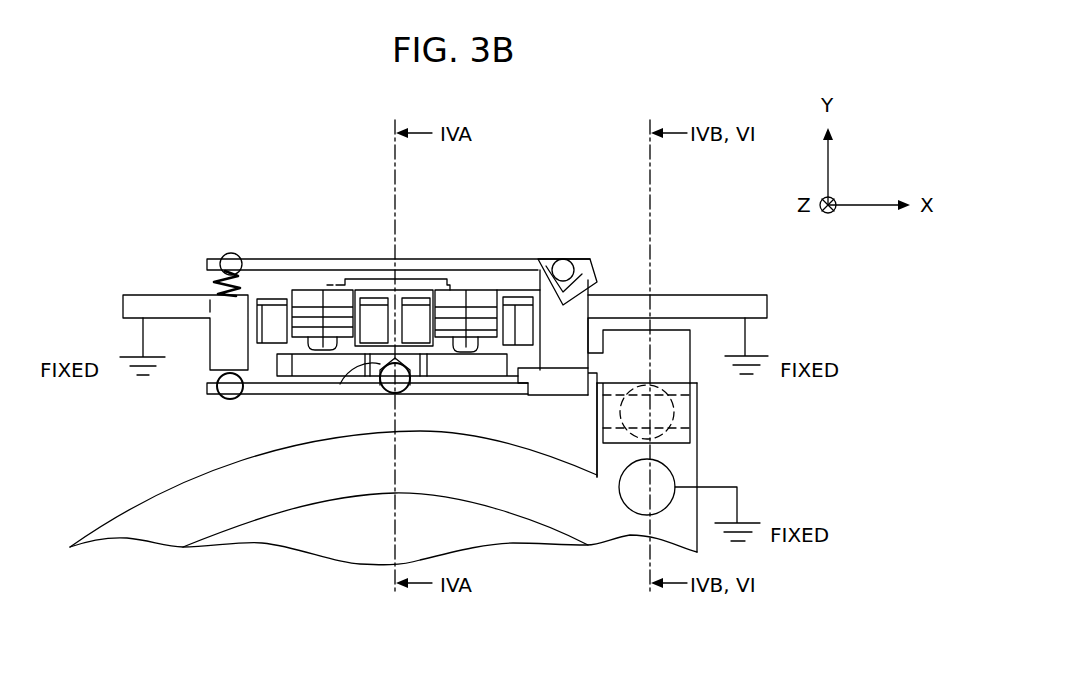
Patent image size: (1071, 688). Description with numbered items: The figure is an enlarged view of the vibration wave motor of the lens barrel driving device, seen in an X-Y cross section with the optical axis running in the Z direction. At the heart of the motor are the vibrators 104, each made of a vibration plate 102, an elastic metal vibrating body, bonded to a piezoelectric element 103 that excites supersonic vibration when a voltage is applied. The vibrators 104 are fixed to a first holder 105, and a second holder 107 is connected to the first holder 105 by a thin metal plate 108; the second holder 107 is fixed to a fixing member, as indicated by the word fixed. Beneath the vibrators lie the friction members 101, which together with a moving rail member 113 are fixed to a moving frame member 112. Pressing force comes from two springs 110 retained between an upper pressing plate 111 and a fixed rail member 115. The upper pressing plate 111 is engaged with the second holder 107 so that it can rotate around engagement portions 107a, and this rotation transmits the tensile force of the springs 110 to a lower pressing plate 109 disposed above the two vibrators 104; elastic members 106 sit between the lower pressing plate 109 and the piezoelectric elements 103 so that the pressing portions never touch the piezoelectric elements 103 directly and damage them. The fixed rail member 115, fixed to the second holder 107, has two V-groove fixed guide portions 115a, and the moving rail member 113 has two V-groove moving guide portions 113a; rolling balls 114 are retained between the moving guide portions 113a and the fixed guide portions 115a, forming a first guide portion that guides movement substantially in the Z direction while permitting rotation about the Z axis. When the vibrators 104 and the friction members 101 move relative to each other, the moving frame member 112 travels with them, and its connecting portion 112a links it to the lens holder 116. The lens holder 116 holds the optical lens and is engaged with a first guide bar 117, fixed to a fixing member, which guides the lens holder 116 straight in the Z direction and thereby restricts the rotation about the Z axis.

The friction member 101 is at (495, 366).
The vibration plate 102 is at (471, 298).
The piezoelectric element 103 is at (527, 302).
The vibrator 104 is at (565, 209).
The first holder 105 is at (380, 300).
The elastic member 106 is at (452, 298).
The second holder 107 is at (575, 315).
The engagement portion 107a is at (575, 256).
The thin metal plate 108 is at (423, 298).
The lower pressing plate 109 is at (302, 295).
The spring 110 is at (222, 290).
The upper pressing plate 111 is at (255, 265).
The moving frame member 112 is at (683, 340).
The connecting portion 112a is at (692, 405).
The moving rail member 113 is at (420, 368).
The moving guide portion 113a is at (406, 391).
The rolling ball 114 is at (392, 393).
The fixed rail member 115 is at (255, 395).
The fixed guide portion 115a is at (388, 363).
The lens holder 116 is at (692, 450).
The first guide bar 117 is at (667, 478).